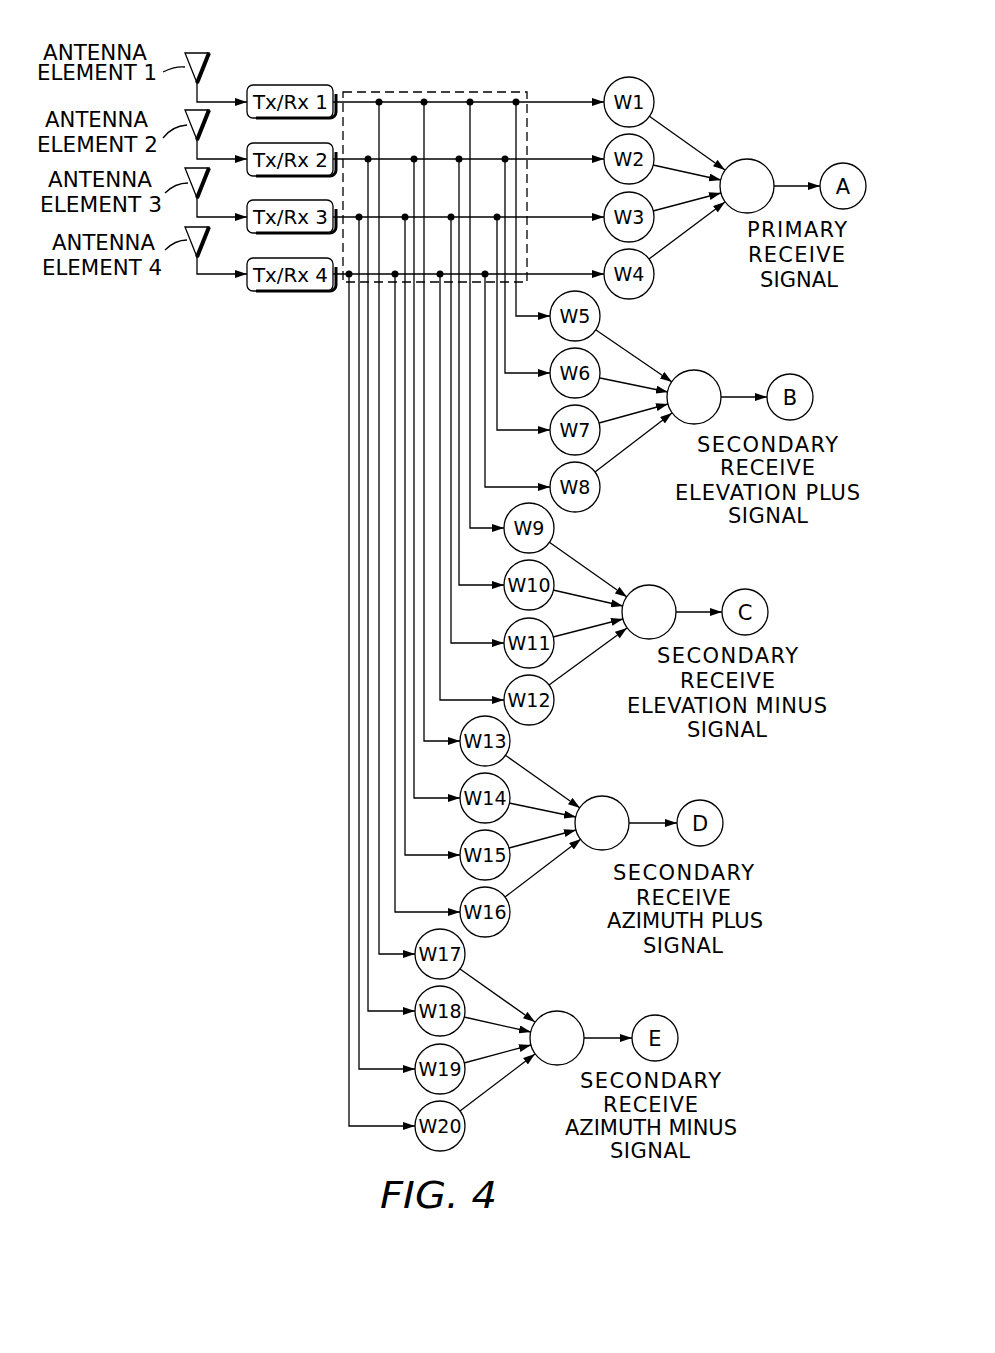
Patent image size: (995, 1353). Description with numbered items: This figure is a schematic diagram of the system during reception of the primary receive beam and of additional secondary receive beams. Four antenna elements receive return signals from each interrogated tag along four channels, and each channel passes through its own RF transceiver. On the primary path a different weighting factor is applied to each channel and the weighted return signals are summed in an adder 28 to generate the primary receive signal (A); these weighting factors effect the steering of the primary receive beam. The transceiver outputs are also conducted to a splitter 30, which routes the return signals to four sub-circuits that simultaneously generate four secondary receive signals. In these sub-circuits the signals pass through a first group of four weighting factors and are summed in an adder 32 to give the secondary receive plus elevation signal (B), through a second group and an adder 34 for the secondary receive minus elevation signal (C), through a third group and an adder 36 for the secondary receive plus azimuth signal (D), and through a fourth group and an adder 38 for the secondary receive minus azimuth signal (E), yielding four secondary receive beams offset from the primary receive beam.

The adder 28 is at (749, 160).
The splitter 30 is at (450, 84).
The adder 32 is at (695, 371).
The adder 34 is at (649, 585).
The adder 36 is at (603, 796).
The adder 38 is at (558, 1011).